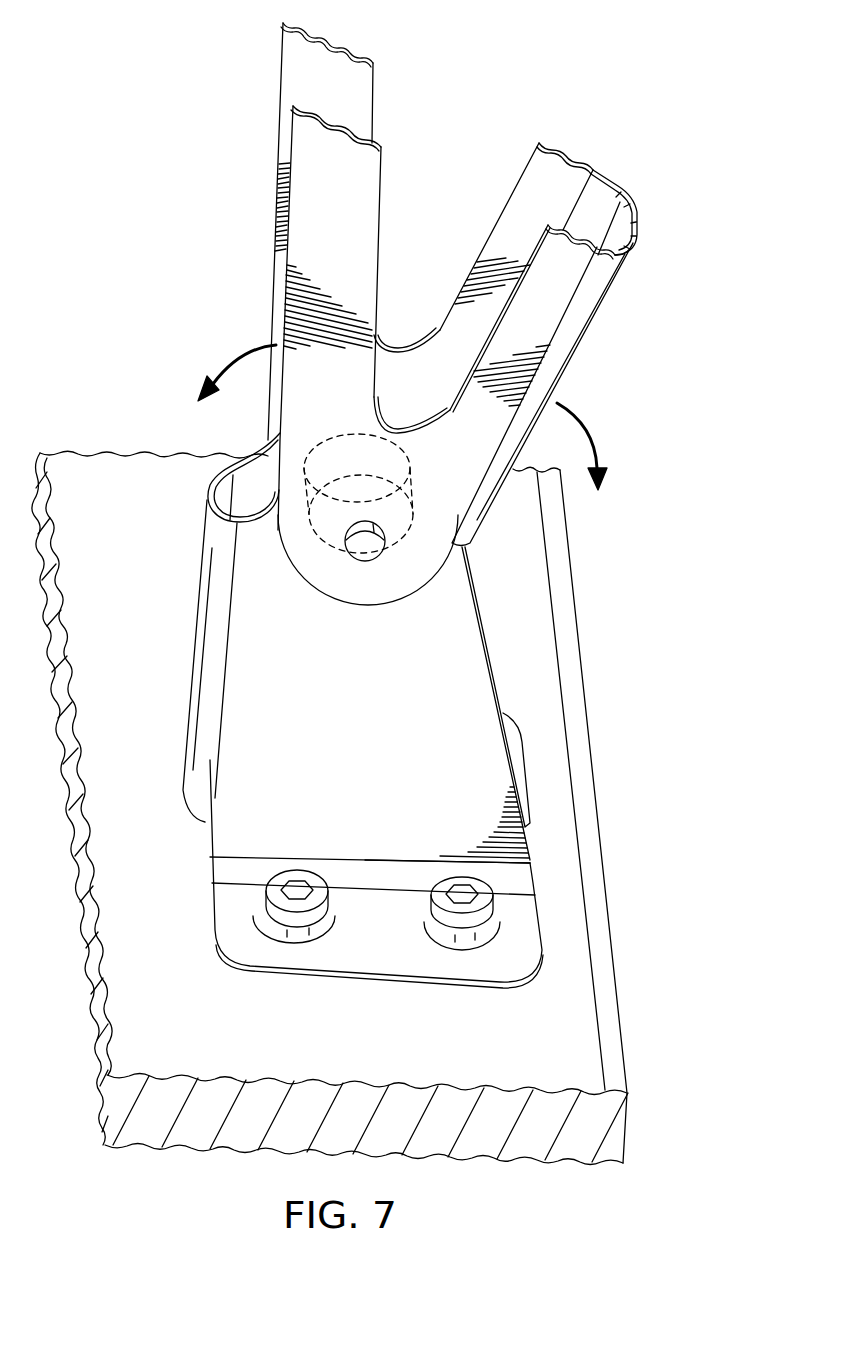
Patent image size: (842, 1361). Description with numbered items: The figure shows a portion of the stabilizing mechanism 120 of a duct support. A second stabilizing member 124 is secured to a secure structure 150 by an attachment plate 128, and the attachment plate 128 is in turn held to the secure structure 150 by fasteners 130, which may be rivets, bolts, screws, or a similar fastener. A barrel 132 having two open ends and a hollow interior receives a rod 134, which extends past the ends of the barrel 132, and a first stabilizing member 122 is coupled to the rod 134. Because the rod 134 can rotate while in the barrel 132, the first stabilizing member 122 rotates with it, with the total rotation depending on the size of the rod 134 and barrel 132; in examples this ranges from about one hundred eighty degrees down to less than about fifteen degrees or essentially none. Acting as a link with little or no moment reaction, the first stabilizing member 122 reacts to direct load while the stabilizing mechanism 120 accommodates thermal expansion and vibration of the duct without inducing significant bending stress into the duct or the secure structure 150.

The stabilizing mechanism 120 is at (388, 333).
The first stabilizing member 122 is at (580, 348).
The second stabilizing member 124 is at (198, 583).
The attachment plate 128 is at (305, 870).
The fasteners 130 is at (363, 738).
The barrel 132 is at (345, 432).
The rod 134 is at (369, 561).
The secure structure 150 is at (540, 690).